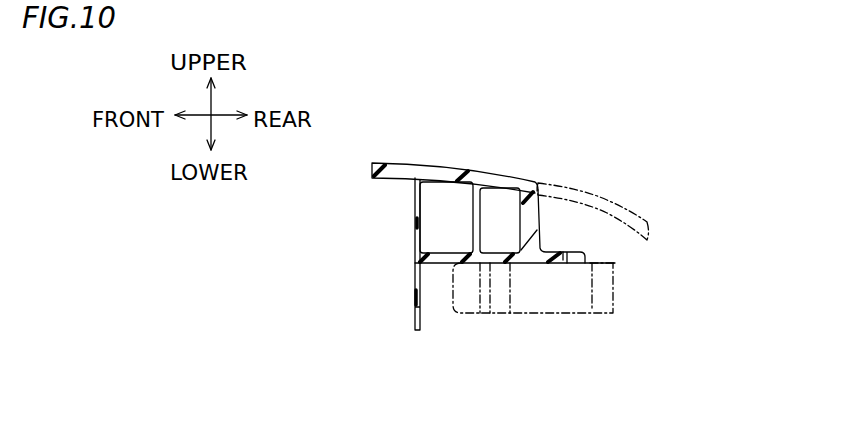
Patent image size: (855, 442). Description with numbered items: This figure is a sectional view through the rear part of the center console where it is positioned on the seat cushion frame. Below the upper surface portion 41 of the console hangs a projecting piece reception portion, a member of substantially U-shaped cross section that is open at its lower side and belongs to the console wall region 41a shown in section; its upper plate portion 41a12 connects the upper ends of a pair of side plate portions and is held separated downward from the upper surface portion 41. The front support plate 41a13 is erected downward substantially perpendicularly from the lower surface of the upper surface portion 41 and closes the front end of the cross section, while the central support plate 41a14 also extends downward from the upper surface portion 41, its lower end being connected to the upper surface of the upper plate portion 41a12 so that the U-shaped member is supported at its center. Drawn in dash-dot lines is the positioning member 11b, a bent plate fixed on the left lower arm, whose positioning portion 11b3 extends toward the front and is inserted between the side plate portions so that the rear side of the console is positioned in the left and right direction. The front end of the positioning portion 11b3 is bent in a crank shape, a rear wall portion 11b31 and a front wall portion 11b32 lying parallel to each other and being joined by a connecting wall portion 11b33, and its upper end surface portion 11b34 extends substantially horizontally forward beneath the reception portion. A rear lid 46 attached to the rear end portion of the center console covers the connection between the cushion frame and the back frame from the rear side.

The upper surface portion 41 is at (451, 234).
The upper flange portion of reinforcement member 41a is at (398, 163).
The upper plate portion 41a12 is at (435, 263).
The front support plate 41a13 is at (415, 288).
The central support plate 41a14 is at (482, 223).
The positioning member 11b is at (571, 287).
The positioning portion 11b3 is at (577, 313).
The rear wall portion 11b31 is at (550, 313).
The front wall portion 11b32 is at (472, 313).
The connecting wall portion 11b33 is at (502, 313).
The upper end surface portion 11b34 is at (563, 252).
The rear lid 46 is at (613, 205).